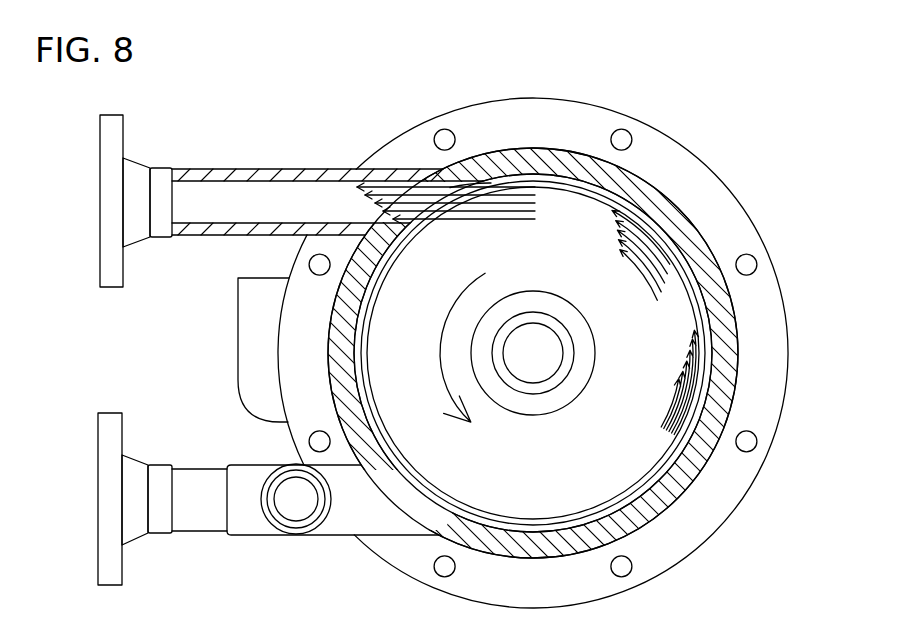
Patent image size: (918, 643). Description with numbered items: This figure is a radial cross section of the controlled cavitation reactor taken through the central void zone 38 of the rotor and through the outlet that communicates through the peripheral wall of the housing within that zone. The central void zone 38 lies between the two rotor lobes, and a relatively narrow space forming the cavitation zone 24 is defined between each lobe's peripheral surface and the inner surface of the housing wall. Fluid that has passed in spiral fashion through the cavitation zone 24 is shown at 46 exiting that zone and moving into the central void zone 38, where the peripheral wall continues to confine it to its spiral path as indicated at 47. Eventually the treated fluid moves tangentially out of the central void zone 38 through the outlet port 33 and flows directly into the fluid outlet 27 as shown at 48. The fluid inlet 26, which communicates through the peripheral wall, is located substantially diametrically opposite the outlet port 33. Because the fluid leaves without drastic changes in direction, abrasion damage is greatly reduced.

The cavitation zone 24 is at (652, 480).
The fluid inlet 26 is at (220, 566).
The fluid outlet 27 is at (260, 142).
The outlet port 33 is at (447, 197).
The central void zone 38 is at (546, 481).
The fluid exiting the cavitation zone 46 is at (682, 398).
The spiral fluid path 47 is at (638, 277).
The tangential outflow 48 is at (485, 218).